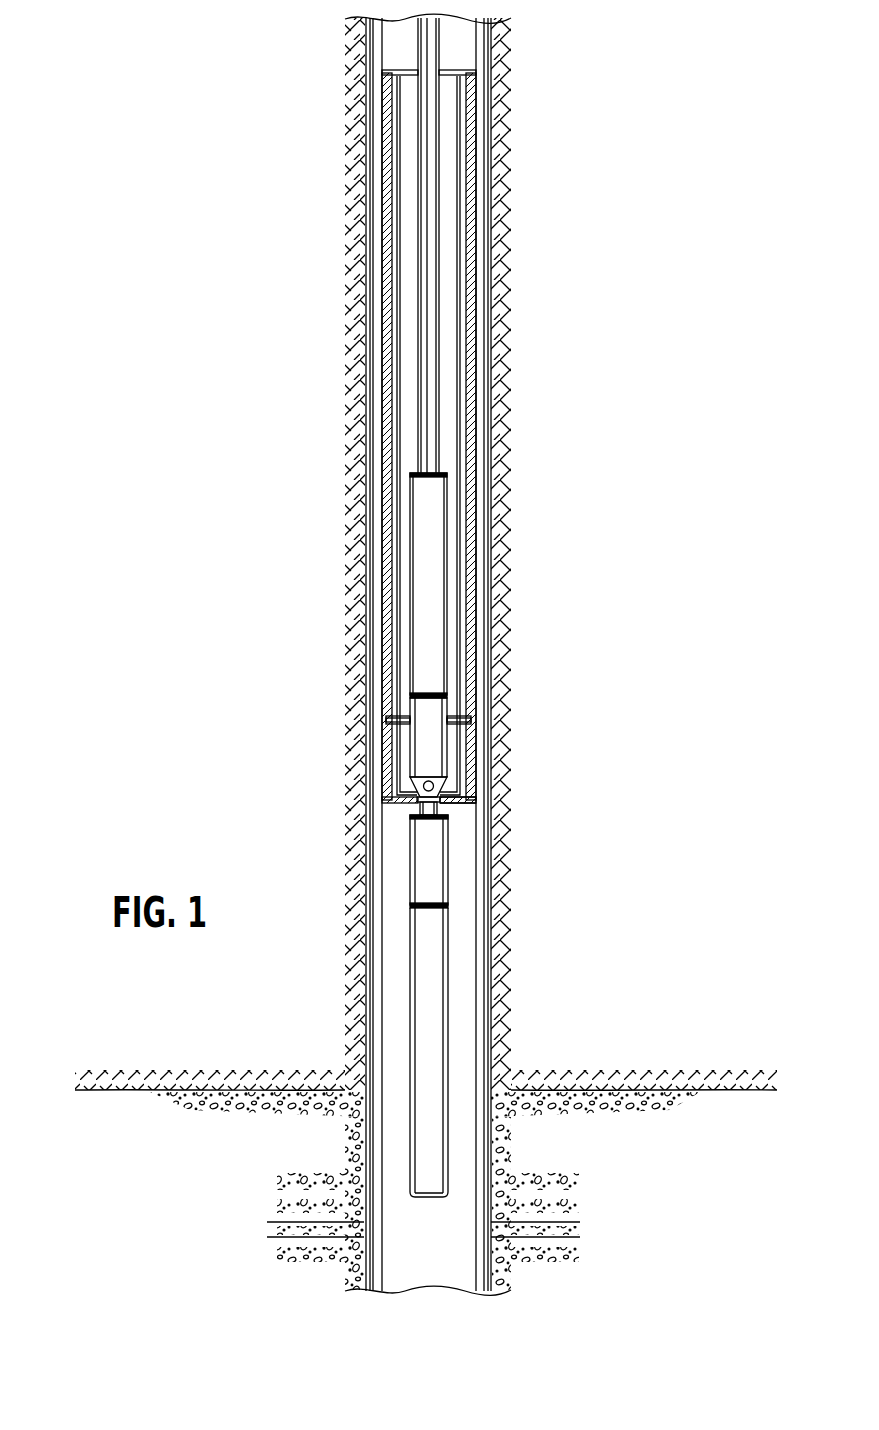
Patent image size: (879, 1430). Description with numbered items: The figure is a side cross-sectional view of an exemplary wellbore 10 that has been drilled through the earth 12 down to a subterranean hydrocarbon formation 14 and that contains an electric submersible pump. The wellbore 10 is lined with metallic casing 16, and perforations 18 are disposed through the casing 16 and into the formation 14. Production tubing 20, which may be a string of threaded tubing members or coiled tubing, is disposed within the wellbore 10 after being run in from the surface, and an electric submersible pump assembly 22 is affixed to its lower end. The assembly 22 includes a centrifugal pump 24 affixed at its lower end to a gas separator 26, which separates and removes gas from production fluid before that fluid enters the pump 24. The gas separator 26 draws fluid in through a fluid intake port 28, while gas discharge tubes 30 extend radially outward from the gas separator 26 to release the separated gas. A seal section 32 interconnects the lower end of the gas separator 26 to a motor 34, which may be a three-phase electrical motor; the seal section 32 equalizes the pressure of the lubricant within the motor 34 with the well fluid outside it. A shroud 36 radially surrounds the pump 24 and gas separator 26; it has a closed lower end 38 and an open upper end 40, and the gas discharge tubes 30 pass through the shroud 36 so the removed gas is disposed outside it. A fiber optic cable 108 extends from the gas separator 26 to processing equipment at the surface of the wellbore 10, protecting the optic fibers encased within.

The wellbore 10 is at (496, 231).
The earth 12 is at (196, 342).
The subterranean hydrocarbon formation 14 is at (142, 1154).
The metallic casing 16 is at (366, 184).
The perforations 18 is at (364, 1217).
The production tubing 20 is at (440, 148).
The electric submersible pump assembly 22 is at (394, 818).
The centrifugal pump 24 is at (415, 535).
The gas separator 26 is at (443, 749).
The fluid intake port 28 is at (413, 786).
The gas discharge tubes 30 is at (405, 714).
The seal section 32 is at (443, 872).
The motor 34 is at (443, 1001).
The shroud 36 is at (470, 386).
The closed lower end 38 is at (458, 803).
The open upper end 40 is at (408, 73).
The fiber optic cable 108 is at (455, 305).